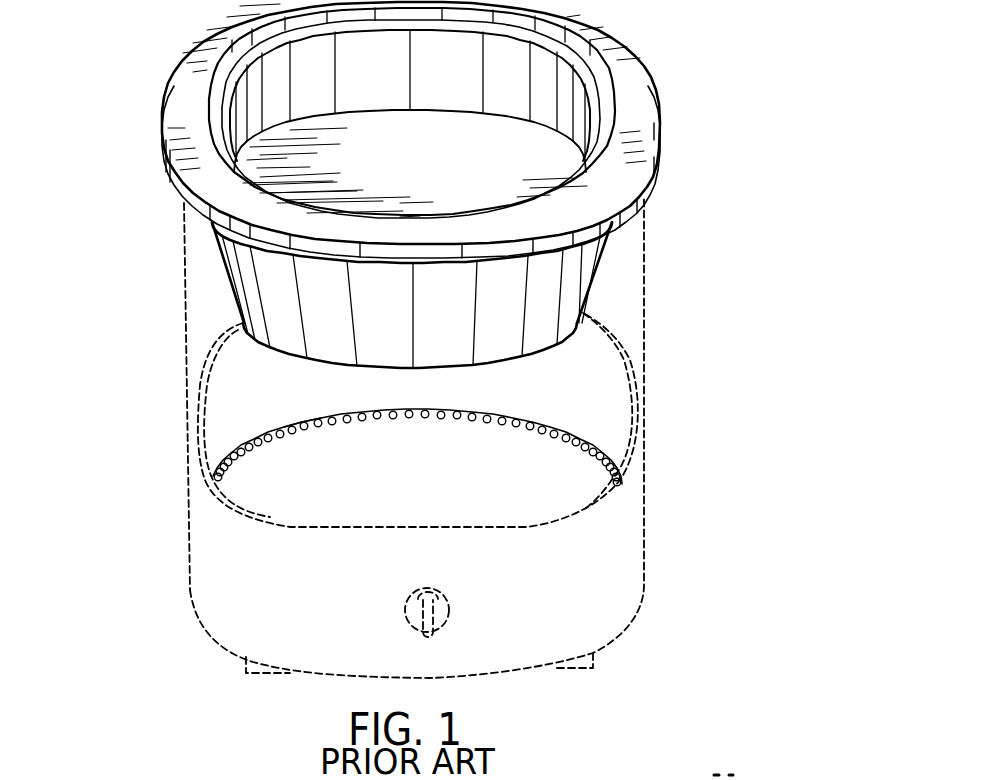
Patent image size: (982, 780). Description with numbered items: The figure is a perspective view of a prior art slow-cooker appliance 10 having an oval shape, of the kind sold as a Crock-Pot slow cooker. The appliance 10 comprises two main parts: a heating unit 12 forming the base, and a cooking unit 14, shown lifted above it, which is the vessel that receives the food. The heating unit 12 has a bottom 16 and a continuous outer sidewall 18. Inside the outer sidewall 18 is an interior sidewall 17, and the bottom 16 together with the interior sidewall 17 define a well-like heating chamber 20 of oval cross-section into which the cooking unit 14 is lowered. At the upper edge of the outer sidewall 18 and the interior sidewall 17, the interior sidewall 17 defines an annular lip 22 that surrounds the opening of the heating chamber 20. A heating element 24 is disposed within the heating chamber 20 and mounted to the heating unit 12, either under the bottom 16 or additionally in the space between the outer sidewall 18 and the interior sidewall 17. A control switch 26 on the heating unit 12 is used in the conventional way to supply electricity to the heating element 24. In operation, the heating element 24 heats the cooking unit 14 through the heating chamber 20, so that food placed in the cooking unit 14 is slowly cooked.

The slow-cooker appliance 10 is at (378, 371).
The heating unit 12 is at (427, 470).
The cooking unit 14 is at (610, 262).
The bottom 16 is at (448, 537).
The interior sidewall 17 is at (463, 468).
The outer sidewall 18 is at (212, 536).
The heating chamber 20 is at (391, 497).
The annular lip 22 is at (562, 517).
The heating element 24 is at (304, 430).
The control switch 26 is at (453, 621).